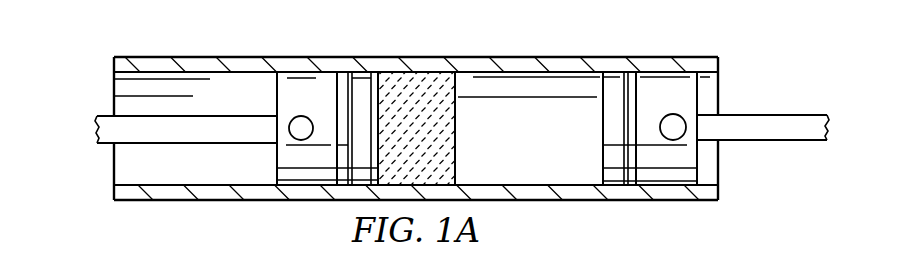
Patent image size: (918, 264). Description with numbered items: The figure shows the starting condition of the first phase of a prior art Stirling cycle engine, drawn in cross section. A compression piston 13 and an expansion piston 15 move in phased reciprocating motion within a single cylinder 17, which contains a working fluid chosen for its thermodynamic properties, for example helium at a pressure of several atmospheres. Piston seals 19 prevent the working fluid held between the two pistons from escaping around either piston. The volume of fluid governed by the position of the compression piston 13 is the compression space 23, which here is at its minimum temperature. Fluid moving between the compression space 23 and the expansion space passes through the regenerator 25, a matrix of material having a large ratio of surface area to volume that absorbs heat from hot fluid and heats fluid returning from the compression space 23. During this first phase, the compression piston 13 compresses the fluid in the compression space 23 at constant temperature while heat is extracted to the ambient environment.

The compression piston 13 is at (697, 93).
The expansion piston 15 is at (277, 100).
The cylinder 17 is at (152, 184).
The piston seals 19 is at (337, 87).
The compression space 23 is at (557, 173).
The regenerator 25 is at (455, 88).